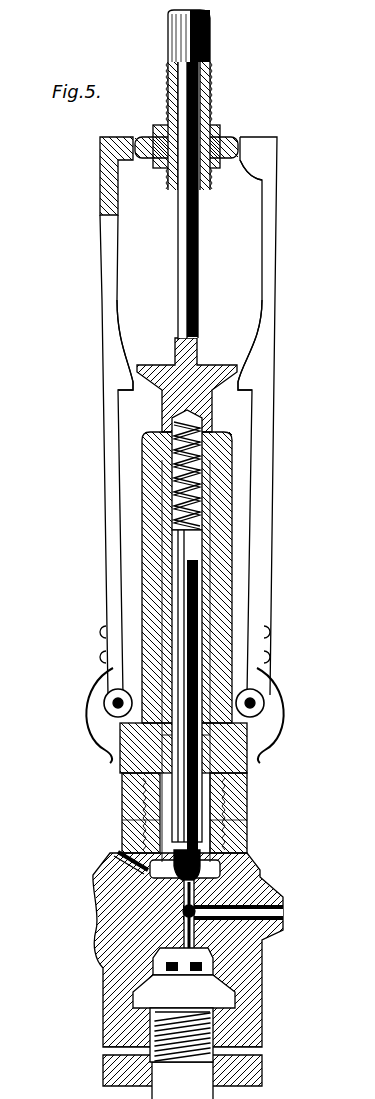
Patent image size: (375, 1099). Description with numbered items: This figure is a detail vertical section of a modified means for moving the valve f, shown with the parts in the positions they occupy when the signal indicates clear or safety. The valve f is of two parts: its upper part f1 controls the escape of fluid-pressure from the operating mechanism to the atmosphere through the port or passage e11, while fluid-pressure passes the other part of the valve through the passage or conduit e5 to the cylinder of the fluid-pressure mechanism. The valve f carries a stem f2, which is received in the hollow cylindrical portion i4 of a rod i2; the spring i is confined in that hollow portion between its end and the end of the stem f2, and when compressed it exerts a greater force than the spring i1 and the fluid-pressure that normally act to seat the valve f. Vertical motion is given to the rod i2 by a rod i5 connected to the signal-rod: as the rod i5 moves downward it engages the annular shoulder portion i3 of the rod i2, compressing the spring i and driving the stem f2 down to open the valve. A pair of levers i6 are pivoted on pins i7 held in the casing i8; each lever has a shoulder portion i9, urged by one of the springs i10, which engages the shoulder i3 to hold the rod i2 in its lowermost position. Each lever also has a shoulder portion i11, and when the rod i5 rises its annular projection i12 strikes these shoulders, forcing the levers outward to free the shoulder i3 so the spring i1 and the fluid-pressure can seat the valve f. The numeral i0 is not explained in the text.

The spring i is at (190, 488).
The spring i1 is at (207, 1037).
The rod i2 is at (199, 303).
The annular shoulder portion i3 is at (212, 366).
The hollow cylindrical portion i4 is at (200, 553).
The rod i5 is at (210, 78).
The levers i6 is at (110, 462).
The pins i7 is at (113, 705).
The casing i8 is at (242, 772).
The shoulder portion i9 is at (125, 383).
The arm shoulder i0 is at (245, 383).
The springs i10 is at (100, 724).
The shoulder portion i11 is at (118, 150).
The annular projection i12 is at (226, 140).
The valve f is at (212, 957).
The upper part of valve f1 is at (200, 874).
The stem f2 is at (185, 652).
The passage or conduit e5 is at (286, 915).
The port or passage e11 is at (140, 860).